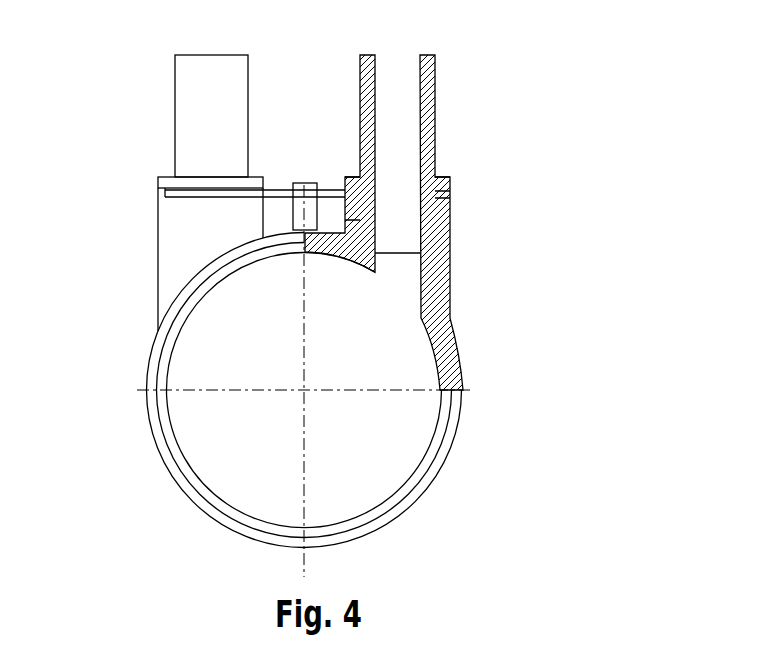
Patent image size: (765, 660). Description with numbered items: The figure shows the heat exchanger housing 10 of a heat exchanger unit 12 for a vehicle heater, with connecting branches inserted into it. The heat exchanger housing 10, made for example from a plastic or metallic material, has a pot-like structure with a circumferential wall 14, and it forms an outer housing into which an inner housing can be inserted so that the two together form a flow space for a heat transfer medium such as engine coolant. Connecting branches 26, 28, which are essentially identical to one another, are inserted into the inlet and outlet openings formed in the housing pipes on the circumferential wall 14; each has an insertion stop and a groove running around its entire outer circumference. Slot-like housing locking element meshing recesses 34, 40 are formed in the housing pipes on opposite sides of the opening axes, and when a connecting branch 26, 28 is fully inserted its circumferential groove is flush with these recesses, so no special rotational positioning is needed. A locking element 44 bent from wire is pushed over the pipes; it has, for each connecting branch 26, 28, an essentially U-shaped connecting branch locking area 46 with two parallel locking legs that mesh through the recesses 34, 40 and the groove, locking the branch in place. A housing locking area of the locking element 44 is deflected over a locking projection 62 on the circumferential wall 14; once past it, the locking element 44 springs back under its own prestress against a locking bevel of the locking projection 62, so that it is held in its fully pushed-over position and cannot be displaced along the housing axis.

The heat exchanger housing 10 is at (457, 440).
The heat exchanger unit 12 is at (575, 110).
The circumferential wall 14 is at (163, 460).
The connecting branch 26 is at (175, 72).
The connecting branch 28 is at (435, 75).
The housing locking element meshing recess 34 is at (160, 192).
The housing locking element meshing recess 40 is at (447, 192).
The locking element 44 is at (272, 190).
The connecting branch locking area 46 is at (203, 197).
The locking projection 62 is at (312, 183).